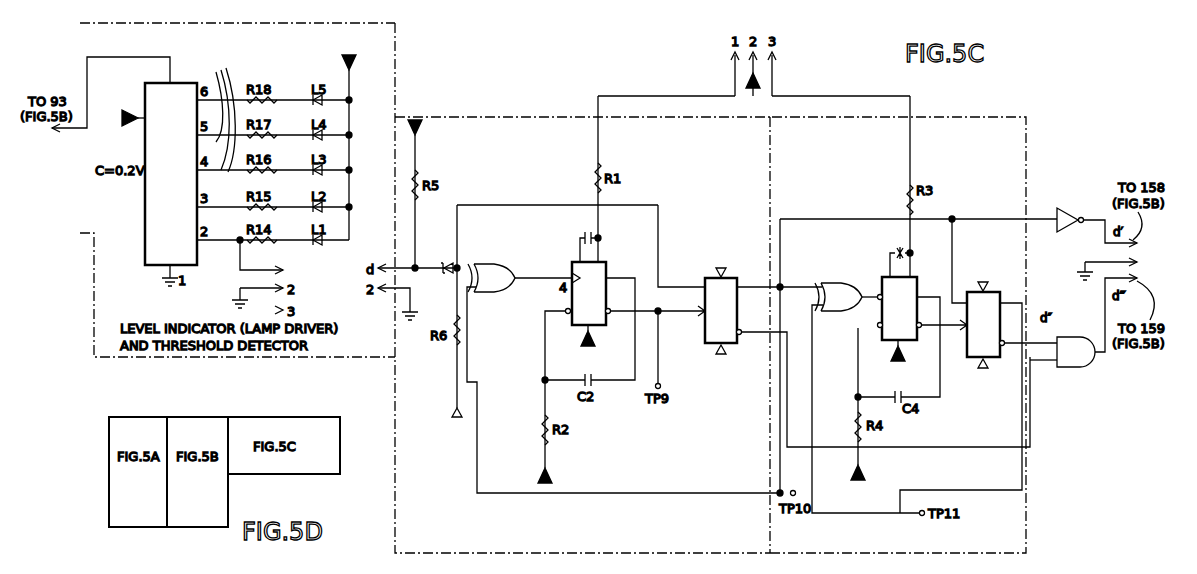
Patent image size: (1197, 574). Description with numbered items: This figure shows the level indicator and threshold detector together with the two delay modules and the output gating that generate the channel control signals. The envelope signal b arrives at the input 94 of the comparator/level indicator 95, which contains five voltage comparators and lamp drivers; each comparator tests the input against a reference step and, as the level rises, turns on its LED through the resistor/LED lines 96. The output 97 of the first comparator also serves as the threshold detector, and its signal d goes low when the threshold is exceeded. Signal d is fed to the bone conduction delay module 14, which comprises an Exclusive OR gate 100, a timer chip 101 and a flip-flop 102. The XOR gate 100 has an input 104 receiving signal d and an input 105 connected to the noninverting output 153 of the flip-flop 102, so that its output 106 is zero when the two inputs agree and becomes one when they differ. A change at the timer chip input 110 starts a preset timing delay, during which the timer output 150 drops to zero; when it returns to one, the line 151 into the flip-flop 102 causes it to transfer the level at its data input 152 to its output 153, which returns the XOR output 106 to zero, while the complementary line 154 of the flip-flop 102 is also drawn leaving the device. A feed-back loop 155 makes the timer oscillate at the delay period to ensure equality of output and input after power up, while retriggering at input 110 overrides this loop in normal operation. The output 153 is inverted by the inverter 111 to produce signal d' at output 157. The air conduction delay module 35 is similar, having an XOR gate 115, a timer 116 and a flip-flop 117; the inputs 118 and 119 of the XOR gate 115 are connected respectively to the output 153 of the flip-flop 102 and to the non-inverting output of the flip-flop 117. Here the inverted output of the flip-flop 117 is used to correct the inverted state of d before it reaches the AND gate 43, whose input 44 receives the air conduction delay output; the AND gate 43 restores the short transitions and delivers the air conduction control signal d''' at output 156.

The first time delay module 14 is at (582, 288).
The second delay module 35 is at (898, 335).
The AND gate 43 is at (1066, 337).
The input of the AND gate 44 is at (1050, 342).
The input of comparator/level indicator 94 is at (170, 72).
The comparator/level indicator 95 is at (176, 187).
The resistor/LED lines 96 is at (229, 112).
The output of comparator #1 97 is at (266, 258).
The Exclusive OR gate 100 is at (503, 286).
The timer chip 101 is at (598, 311).
The flip-flop 102 is at (729, 328).
The input of XOR gate 104 is at (460, 282).
The input of XOR gate 105 is at (465, 300).
The XOR output 106 is at (543, 286).
The timer chip input 110 is at (569, 276).
The inverter 111 is at (1063, 225).
The XOR gate 115 is at (824, 310).
The timer 116 is at (907, 300).
The flip-flop 117 is at (992, 316).
The input of XOR gate 115 118 is at (810, 284).
The input of XOR gate 115 119 is at (814, 312).
The timer output 150 is at (632, 301).
The trigger input of one-shot 102 151 is at (683, 306).
The data input 152 is at (692, 288).
The noninverting output 153 is at (742, 285).
The complementary output of one-shot 102 154 is at (768, 332).
The feed-back loop 155 is at (574, 383).
The output 156 is at (1103, 289).
The output 157 is at (1103, 246).